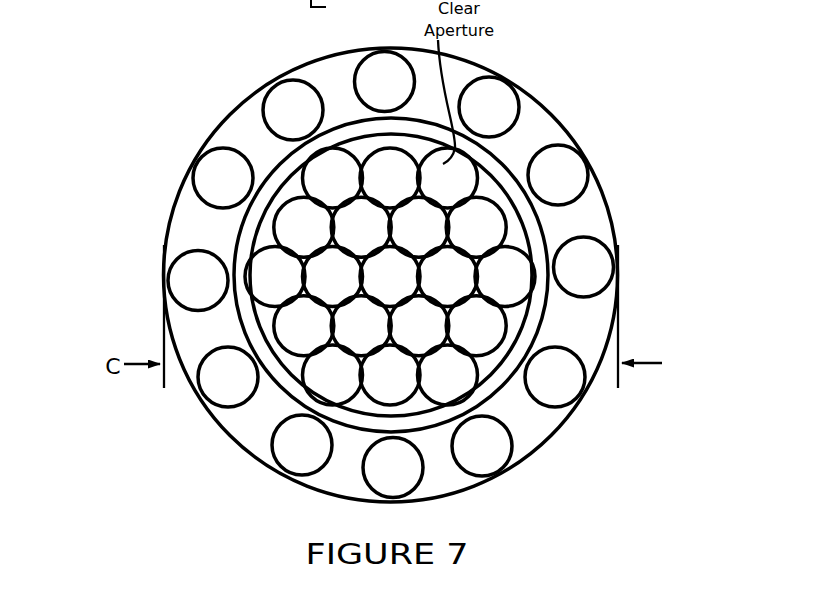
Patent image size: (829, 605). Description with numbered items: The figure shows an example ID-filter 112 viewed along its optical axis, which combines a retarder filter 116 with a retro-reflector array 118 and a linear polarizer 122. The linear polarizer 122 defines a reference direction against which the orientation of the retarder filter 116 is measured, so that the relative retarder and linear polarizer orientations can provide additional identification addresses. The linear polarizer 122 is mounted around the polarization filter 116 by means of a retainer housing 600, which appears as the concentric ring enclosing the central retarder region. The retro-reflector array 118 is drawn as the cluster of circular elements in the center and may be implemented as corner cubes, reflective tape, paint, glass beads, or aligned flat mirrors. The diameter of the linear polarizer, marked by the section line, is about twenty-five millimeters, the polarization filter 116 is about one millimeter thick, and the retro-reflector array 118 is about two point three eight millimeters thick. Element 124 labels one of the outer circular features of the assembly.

The ID-filter 112 is at (166, 138).
The retarder filter 116 is at (522, 318).
The retro-reflector array 118 is at (207, 0).
The linear polarizer 122 is at (530, 123).
The outer aperture 124 is at (198, 285).
The retainer housing 600 is at (537, 239).